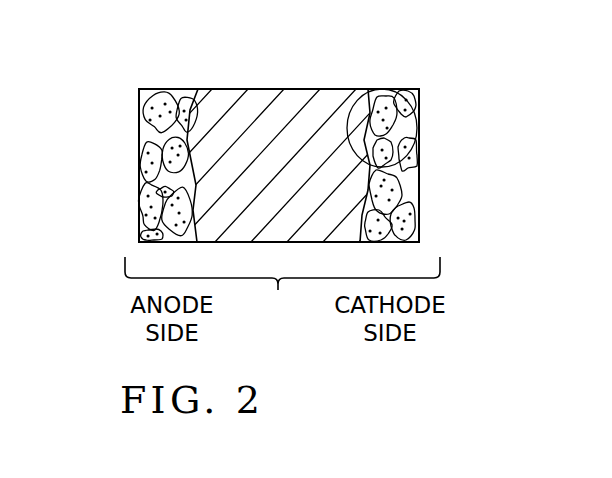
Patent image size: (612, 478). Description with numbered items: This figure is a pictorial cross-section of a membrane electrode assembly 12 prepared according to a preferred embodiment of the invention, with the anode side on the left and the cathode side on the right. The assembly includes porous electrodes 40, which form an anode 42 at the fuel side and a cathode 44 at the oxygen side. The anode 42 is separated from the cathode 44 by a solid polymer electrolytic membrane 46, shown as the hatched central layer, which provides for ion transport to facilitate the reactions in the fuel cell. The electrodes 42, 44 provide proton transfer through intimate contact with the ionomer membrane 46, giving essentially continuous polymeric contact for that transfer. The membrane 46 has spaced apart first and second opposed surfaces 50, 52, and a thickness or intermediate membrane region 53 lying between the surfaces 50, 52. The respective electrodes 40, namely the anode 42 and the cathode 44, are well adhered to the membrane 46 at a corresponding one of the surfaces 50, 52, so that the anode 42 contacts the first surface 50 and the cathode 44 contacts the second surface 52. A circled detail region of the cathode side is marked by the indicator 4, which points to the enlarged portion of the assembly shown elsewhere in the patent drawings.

The section view indicator (FIG. 4 detail) 4 is at (426, 116).
The membrane electrode assembly 12 is at (278, 290).
The porous electrodes 40 is at (288, 165).
The anode 42 is at (140, 188).
The cathode 44 is at (405, 204).
The solid polymer electrolytic membrane 46 is at (307, 88).
The first opposed surface 50 is at (207, 90).
The second opposed surface 52 is at (355, 88).
The intermediate membrane region 53 is at (243, 125).